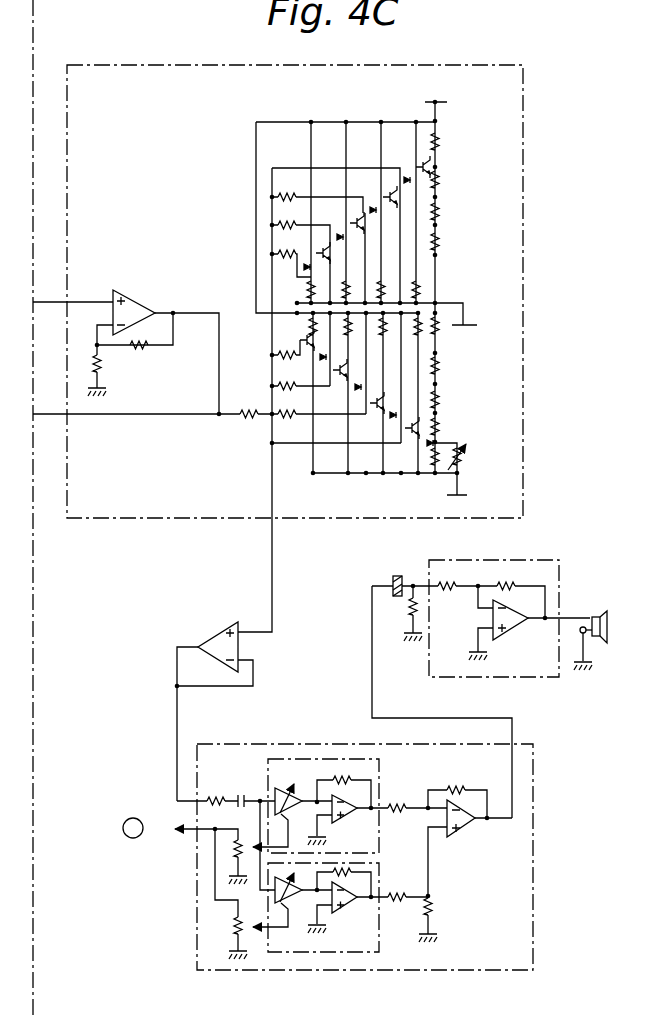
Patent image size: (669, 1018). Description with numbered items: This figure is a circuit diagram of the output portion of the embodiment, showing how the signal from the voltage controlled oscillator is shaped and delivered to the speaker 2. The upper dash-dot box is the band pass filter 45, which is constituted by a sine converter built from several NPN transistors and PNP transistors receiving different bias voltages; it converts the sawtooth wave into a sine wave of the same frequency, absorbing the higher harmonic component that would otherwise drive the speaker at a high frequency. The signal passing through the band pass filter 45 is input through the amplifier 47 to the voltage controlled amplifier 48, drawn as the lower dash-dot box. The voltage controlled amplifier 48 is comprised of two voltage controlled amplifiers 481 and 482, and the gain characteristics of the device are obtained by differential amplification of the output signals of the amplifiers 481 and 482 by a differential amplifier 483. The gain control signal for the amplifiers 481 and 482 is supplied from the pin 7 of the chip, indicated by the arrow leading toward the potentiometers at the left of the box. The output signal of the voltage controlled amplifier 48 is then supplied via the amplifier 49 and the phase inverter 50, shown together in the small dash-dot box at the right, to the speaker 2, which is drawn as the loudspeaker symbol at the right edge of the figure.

The speaker 2 is at (601, 601).
The pin ⑦ of the chip 7 is at (150, 828).
The band pass filter 45 is at (468, 148).
The amplifier 47 is at (262, 651).
The voltage controlled amplifier 48 is at (328, 857).
The amplifier 49 is at (503, 687).
The phase inverter 50 is at (503, 687).
The voltage controlled amplifier 481 is at (384, 777).
The voltage controlled amplifier 482 is at (389, 947).
The differential amplifier 483 is at (457, 842).